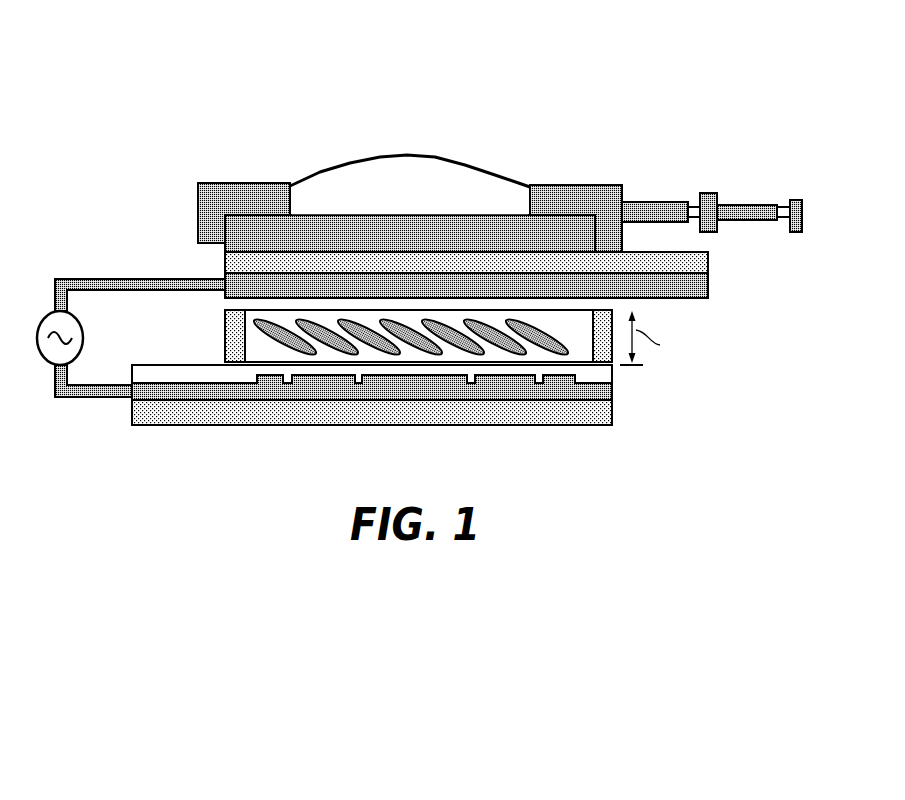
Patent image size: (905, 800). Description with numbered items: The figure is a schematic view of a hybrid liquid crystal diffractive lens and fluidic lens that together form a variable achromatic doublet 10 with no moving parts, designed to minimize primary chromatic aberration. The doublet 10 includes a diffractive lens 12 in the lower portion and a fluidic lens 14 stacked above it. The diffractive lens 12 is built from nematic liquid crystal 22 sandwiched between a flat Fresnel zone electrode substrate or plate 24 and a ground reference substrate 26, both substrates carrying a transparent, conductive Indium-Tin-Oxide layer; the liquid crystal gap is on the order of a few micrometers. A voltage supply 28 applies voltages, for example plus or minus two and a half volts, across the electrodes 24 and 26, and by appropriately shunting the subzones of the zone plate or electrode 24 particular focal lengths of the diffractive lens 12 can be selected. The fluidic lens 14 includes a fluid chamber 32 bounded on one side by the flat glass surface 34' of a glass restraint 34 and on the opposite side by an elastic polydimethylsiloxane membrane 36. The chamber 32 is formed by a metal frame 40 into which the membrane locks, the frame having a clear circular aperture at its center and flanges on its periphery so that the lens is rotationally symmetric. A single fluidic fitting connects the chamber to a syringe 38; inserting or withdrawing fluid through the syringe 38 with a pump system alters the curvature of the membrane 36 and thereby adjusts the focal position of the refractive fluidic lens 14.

The doublet 10 is at (443, 251).
The diffractive lens 12 is at (414, 399).
The fluidic lens 14 is at (453, 169).
The nematic liquid crystal 22 is at (500, 356).
The Fresnel zone electrode substrate 24 is at (375, 391).
The ground reference substrate 26 is at (708, 292).
The voltage supply 28 is at (38, 353).
The fluid chamber 32 is at (378, 197).
The glass restraint 34 is at (467, 189).
The flat glass surface 34' is at (412, 197).
The PDMS membrane 36 is at (368, 150).
The syringe 38 is at (750, 238).
The metal frame 40 is at (248, 183).